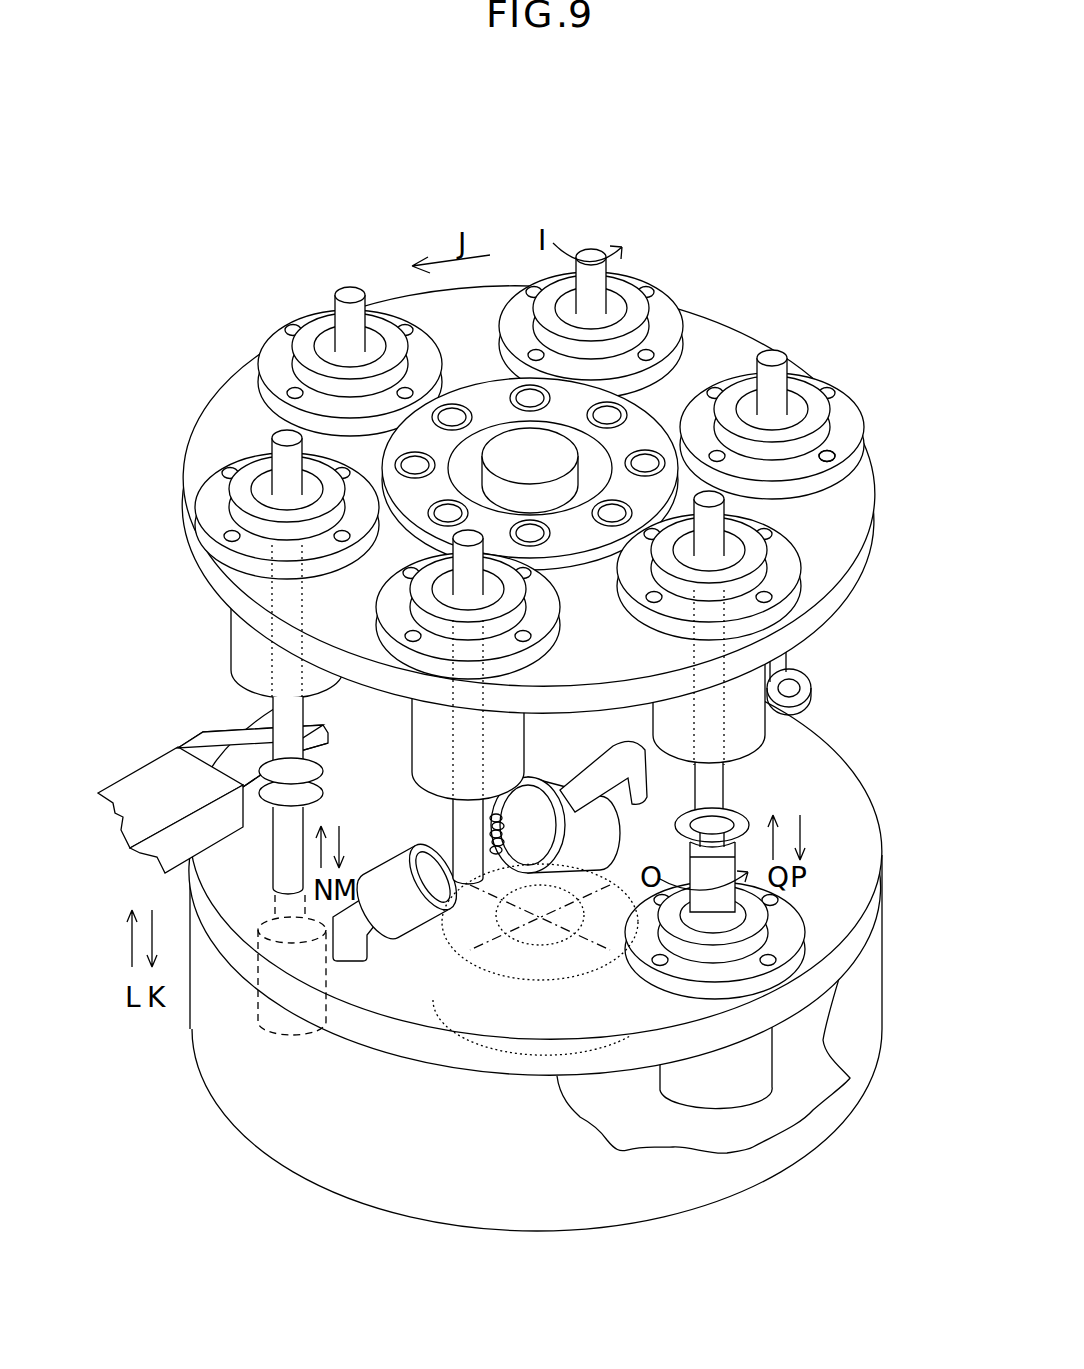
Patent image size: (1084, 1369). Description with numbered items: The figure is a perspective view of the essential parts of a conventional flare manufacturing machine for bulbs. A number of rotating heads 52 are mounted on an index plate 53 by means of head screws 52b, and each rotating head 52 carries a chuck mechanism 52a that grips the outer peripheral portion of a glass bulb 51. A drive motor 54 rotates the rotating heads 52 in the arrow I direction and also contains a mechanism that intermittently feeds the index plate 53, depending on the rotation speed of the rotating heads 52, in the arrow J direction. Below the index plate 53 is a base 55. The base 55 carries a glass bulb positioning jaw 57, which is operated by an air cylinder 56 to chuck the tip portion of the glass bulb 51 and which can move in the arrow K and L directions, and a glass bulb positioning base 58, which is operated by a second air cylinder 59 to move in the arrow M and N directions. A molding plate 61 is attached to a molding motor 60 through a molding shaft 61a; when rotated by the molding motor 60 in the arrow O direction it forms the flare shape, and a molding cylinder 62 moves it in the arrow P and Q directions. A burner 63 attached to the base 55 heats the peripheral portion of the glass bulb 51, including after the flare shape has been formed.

The glass bulb 51 is at (773, 387).
The rotating head 52 is at (843, 428).
The chuck mechanism 52a is at (793, 415).
The head screw 52b is at (835, 463).
The index plate 53 is at (830, 558).
The drive motor 54 is at (465, 990).
The base 55 is at (847, 788).
The air cylinder 56 is at (220, 755).
The glass bulb positioning jaw 57 is at (267, 722).
The glass bulb positioning base 58 is at (297, 827).
The air cylinder 59 is at (263, 997).
The molding motor 60 is at (727, 917).
The molding plate 61 is at (700, 887).
The molding shaft 61a is at (740, 835).
The molding cylinder 62 is at (763, 1057).
The burner 63 is at (443, 897).